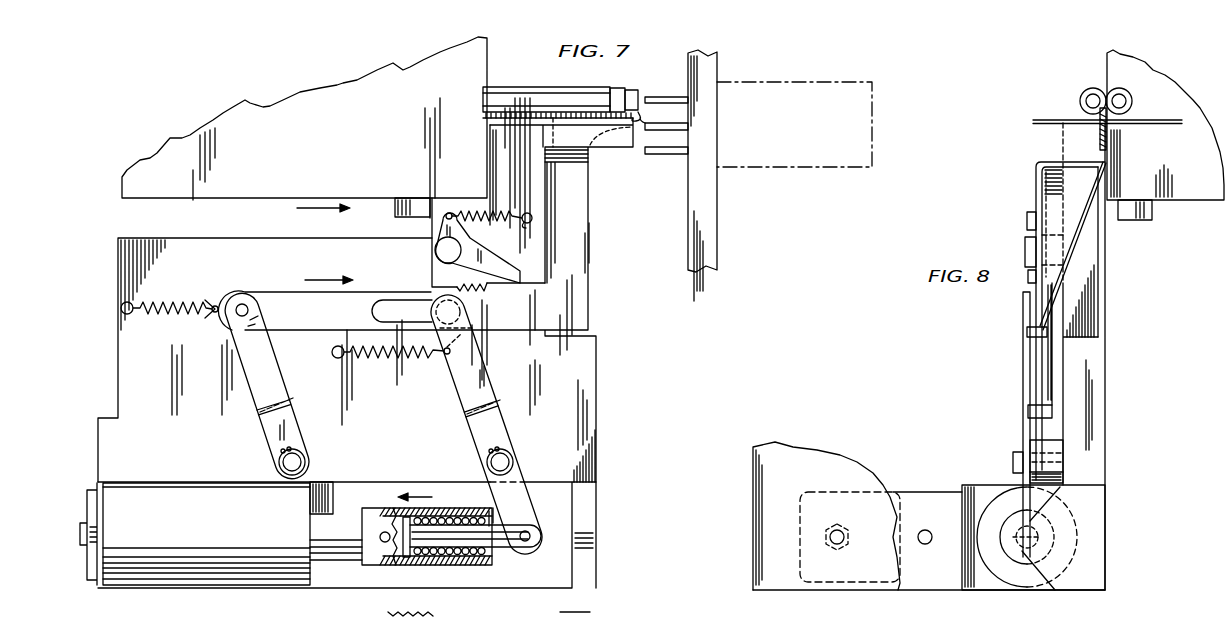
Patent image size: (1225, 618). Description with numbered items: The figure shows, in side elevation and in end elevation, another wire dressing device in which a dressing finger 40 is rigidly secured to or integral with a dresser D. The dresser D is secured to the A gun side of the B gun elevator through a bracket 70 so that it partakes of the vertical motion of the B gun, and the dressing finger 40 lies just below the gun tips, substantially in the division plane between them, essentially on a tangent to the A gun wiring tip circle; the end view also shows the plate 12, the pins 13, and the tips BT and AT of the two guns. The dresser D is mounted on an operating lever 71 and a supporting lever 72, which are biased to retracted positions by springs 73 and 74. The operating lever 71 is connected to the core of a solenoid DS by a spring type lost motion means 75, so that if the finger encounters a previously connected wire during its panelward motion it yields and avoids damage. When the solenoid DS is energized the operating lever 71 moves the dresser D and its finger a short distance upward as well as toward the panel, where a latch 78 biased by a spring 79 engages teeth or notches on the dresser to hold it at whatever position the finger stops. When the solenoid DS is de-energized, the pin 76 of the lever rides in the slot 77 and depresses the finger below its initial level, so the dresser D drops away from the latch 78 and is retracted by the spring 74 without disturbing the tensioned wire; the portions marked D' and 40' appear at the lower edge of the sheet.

In FIG. 7, the plate 12 is at (690, 243).
In FIG. 7, the pins 13 is at (663, 149).
In FIG. 7, the dressing finger 40 is at (653, 98).
In FIG. 8, the dressing finger 40 is at (1070, 130).
In FIG. 8, the bracket 70 is at (940, 492).
In FIG. 7, the operating lever 71 is at (475, 427).
In FIG. 8, the operating lever 71 is at (1024, 425).
In FIG. 7, the supporting lever 72 is at (296, 425).
In FIG. 7, the spring 73 is at (400, 356).
In FIG. 7, the spring 74 is at (169, 315).
In FIG. 7, the spring type lost motion means 75 is at (473, 507).
In FIG. 7, the pin 76 is at (458, 315).
In FIG. 7, the slot 77 is at (383, 307).
In FIG. 7, the latch 78 is at (482, 257).
In FIG. 7, the spring 79 is at (498, 212).
In FIG. 7, the dresser D is at (439, 350).
In FIG. 8, the dresser D is at (1051, 356).
In FIG. 7, the solenoid DS is at (240, 583).
In FIG. 8, the solenoid DS is at (1031, 578).
In FIG. 8, the bottom tape roll BT is at (1088, 90).
In FIG. 8, the adhesive tape roll AT is at (1135, 75).
In FIG. 7, the drive block (alternate) D' is at (432, 610).
In FIG. 7, the guide finger (alternate) 40' is at (575, 610).